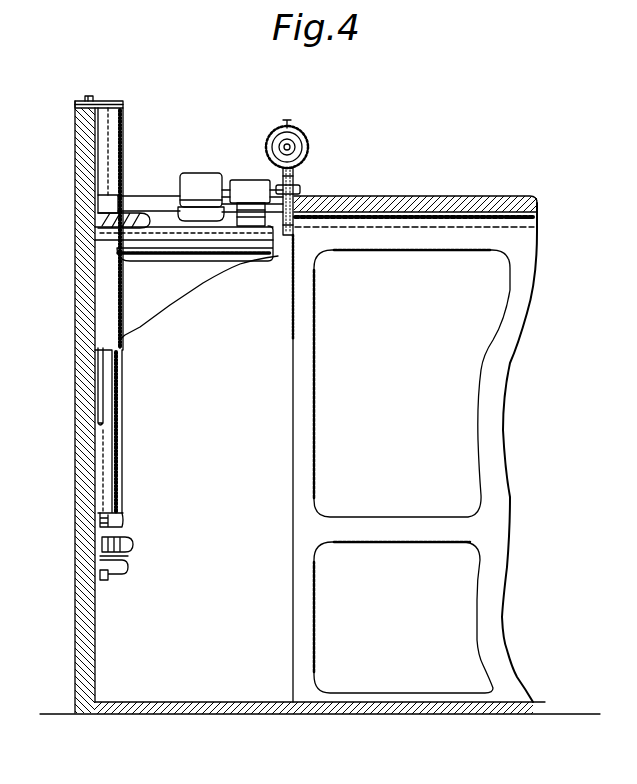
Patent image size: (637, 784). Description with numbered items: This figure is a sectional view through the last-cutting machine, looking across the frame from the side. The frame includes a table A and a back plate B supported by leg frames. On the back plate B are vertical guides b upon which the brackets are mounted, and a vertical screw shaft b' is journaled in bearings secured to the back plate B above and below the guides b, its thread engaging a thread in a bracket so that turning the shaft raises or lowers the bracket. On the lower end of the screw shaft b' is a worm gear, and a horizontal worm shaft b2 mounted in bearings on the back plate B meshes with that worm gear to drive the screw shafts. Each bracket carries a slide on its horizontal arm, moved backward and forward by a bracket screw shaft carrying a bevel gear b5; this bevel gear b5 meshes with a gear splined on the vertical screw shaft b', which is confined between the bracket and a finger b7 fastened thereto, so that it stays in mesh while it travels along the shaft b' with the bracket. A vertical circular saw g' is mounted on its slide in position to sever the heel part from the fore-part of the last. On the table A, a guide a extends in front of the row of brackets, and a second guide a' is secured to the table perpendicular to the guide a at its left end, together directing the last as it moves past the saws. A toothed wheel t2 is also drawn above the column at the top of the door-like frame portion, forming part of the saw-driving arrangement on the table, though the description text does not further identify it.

The table A is at (443, 197).
The back plate B is at (76, 344).
The guide a is at (199, 302).
The second guide a' is at (316, 201).
The vertical guide b is at (112, 301).
The vertical screw shaft b' is at (121, 317).
The horizontal worm shaft b2 is at (136, 545).
The bevel gear b5 is at (150, 265).
The finger b7 is at (123, 212).
The vertical circular saw g' is at (297, 180).
The gear wheel t2 is at (308, 146).